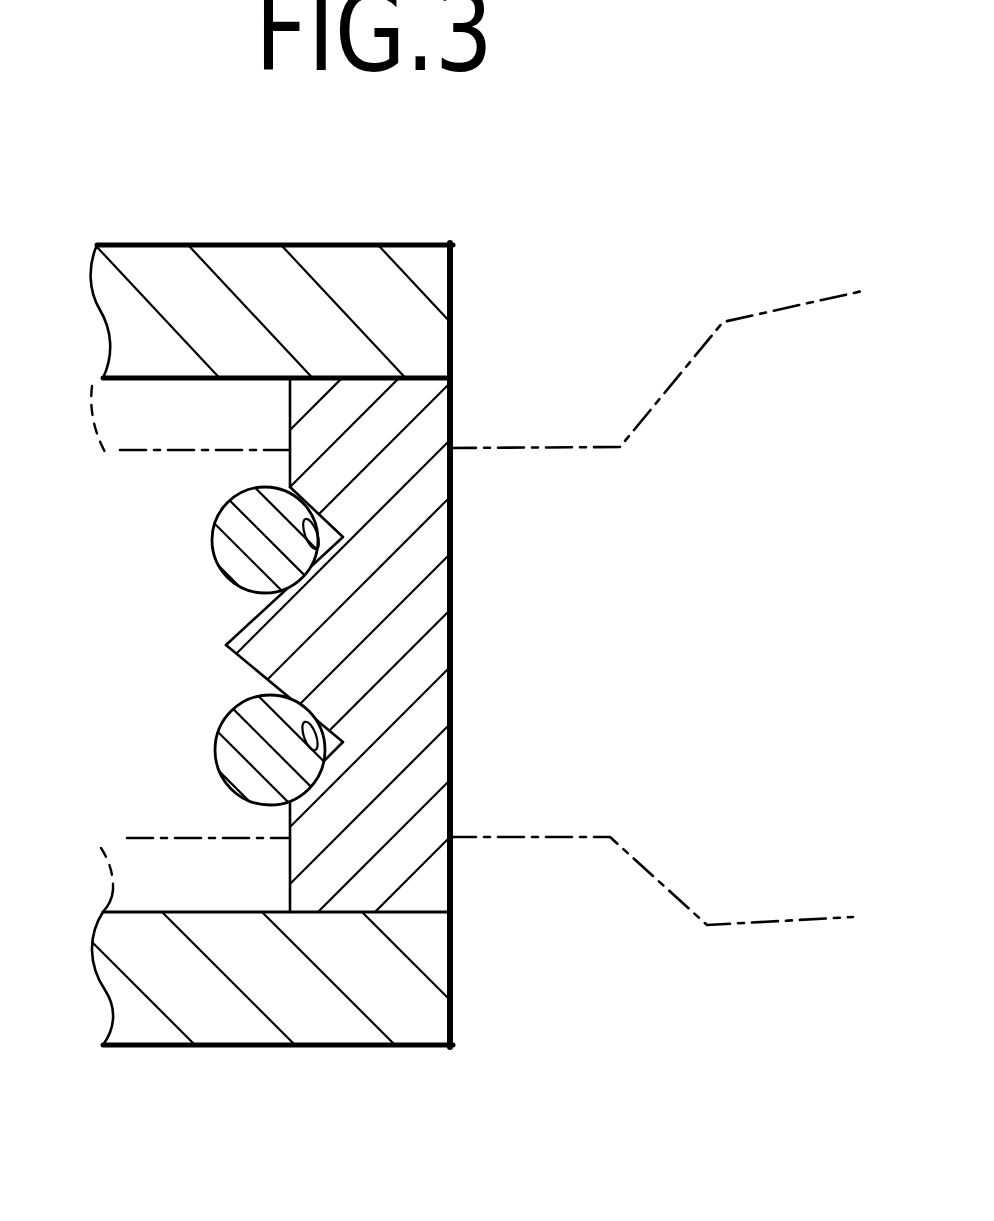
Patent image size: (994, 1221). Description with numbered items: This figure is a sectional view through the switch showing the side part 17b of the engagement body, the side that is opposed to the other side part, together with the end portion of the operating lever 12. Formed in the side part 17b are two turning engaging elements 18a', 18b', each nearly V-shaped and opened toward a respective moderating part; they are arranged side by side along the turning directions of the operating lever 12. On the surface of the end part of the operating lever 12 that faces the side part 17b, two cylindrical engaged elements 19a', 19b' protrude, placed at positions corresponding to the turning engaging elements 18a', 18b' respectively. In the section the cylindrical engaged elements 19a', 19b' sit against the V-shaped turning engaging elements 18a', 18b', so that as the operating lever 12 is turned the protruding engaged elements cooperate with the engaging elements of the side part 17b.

The operating lever 12 is at (797, 303).
The side part 17b is at (290, 405).
The turning engaging element 18a' is at (416, 566).
The turning engaging element 18b' is at (414, 720).
The cylindrical engaged element 19a' is at (189, 547).
The cylindrical engaged element 19b' is at (191, 757).